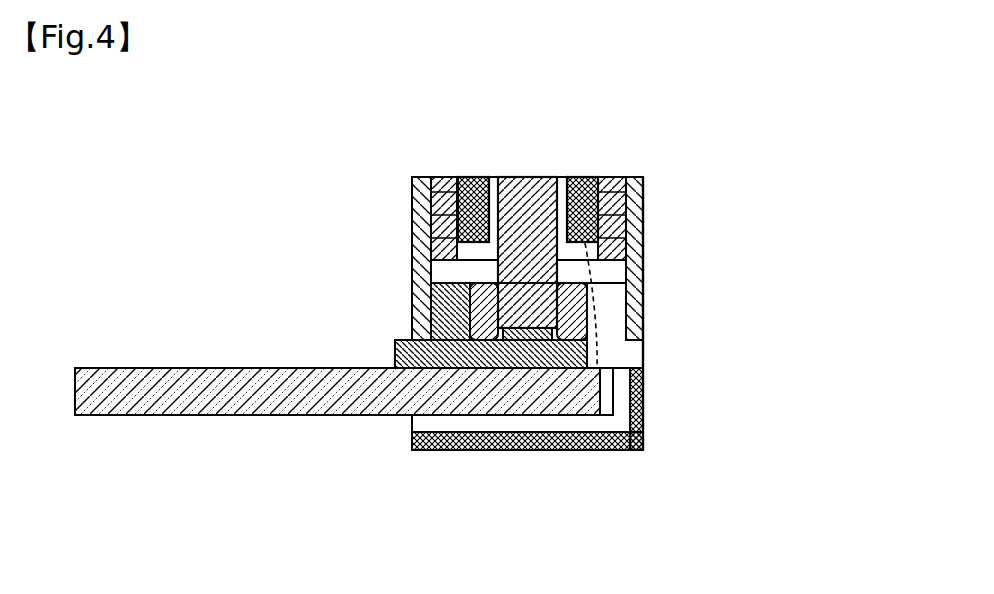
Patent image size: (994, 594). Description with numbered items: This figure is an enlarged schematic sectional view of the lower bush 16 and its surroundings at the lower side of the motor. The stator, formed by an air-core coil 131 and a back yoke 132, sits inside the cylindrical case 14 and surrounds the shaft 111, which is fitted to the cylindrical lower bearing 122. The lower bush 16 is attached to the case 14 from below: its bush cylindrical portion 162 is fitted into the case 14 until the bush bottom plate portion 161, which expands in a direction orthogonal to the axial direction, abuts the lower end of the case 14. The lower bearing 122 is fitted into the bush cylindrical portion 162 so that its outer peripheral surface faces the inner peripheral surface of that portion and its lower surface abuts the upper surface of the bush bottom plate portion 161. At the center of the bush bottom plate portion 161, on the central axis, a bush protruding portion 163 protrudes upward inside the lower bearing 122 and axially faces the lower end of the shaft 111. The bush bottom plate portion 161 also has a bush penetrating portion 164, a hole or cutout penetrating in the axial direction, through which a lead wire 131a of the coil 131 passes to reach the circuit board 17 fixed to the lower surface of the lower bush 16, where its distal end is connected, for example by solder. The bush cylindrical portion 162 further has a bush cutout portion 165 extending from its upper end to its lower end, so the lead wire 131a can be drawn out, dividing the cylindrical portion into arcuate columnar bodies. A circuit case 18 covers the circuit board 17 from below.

The case 14 is at (410, 200).
The back yoke 132 is at (437, 185).
The coil 131 is at (481, 178).
The lead wire 131a is at (600, 270).
The shaft 111 is at (540, 187).
The lower bearing 122 is at (480, 284).
The lower bush 16 is at (400, 332).
The bush bottom plate portion 161 is at (397, 352).
The bush cylindrical portion 162 is at (432, 297).
The bush protruding portion 163 is at (533, 345).
The bush penetrating portion 164 is at (613, 352).
The bush cutout portion 165 is at (610, 310).
The circuit board 17 is at (162, 368).
The circuit case 18 is at (447, 440).